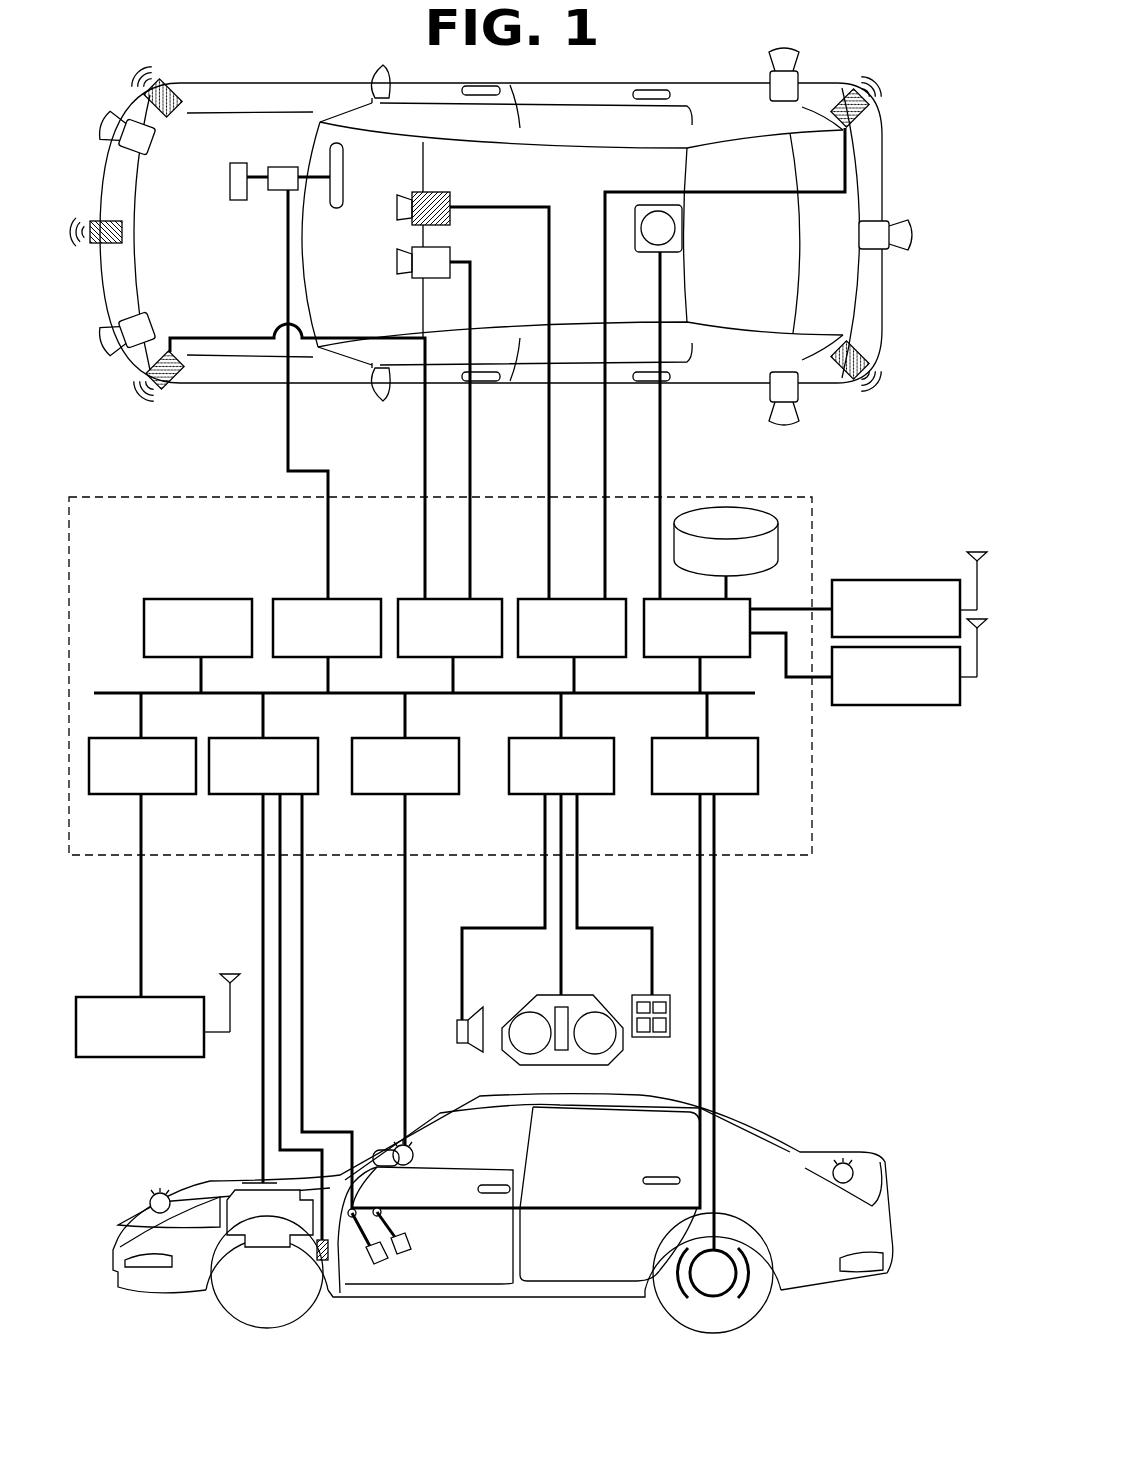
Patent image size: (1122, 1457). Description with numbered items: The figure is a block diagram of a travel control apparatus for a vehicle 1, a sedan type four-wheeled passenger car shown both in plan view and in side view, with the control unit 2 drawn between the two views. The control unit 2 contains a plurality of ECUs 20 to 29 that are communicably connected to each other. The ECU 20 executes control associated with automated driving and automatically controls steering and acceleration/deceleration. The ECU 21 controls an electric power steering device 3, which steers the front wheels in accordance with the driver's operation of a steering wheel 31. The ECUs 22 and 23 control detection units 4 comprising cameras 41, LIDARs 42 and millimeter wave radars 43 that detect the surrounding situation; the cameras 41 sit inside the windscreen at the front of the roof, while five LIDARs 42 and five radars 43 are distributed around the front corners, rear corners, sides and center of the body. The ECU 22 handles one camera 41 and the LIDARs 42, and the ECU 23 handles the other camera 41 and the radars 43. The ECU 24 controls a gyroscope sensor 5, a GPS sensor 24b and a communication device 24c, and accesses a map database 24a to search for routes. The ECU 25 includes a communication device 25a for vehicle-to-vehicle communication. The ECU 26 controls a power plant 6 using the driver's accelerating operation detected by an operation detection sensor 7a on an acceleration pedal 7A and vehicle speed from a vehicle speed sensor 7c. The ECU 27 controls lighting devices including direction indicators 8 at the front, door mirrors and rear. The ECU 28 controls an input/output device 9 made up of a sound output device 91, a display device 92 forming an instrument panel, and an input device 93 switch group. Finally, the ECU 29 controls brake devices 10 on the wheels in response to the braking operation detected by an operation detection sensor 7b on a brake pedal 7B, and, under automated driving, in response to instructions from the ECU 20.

The vehicle 1 is at (897, 142).
The control unit 2 is at (790, 856).
The electric power steering device 3 is at (240, 200).
The steering wheel 31 is at (337, 208).
The detection units 4 is at (127, 96).
The cameras 41 is at (450, 218).
The LIDARs 42 is at (148, 152).
The millimeter wave radars 43 is at (172, 118).
The gyroscope sensor 5 is at (682, 228).
The power plant 6 is at (233, 1178).
The operation detection sensor 7a is at (354, 1178).
The operation detection sensor 7b is at (385, 1211).
The acceleration pedal 7A is at (394, 1257).
The brake pedal 7B is at (407, 1237).
The vehicle speed sensor 7c is at (324, 1262).
The direction indicators 8 is at (151, 1201).
The input/output device 9 is at (551, 1041).
The sound output device 91 is at (457, 1026).
The display device 92 is at (520, 1011).
The input device 93 is at (648, 1038).
The brake devices 10 is at (716, 1296).
The ECU 20 is at (230, 598).
The ECU 21 is at (355, 598).
The ECU 22 is at (448, 598).
The ECU 23 is at (576, 598).
The ECU 24 is at (641, 598).
The database 24a is at (726, 507).
The GPS sensor 24b is at (895, 579).
The communication device 24c is at (887, 706).
The ECU 25 is at (172, 795).
The communication device 25a is at (141, 1058).
The ECU 26 is at (243, 795).
The ECU 27 is at (435, 795).
The ECU 28 is at (600, 795).
The ECU 29 is at (738, 795).